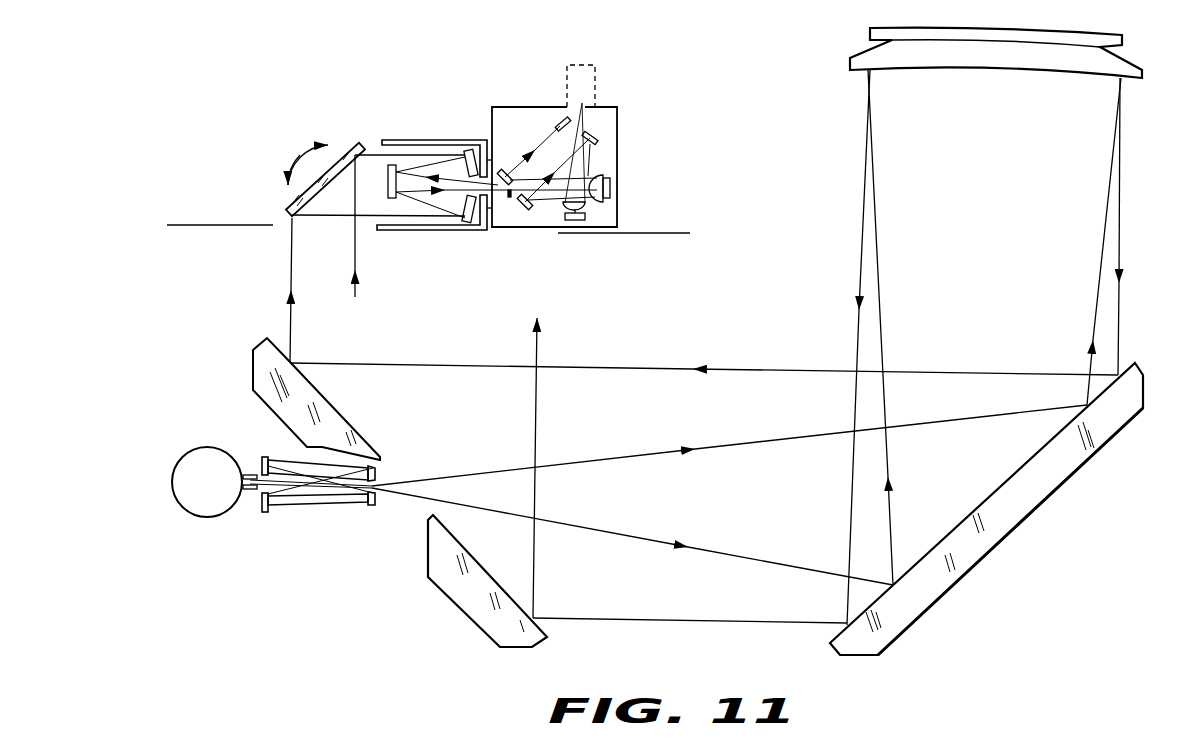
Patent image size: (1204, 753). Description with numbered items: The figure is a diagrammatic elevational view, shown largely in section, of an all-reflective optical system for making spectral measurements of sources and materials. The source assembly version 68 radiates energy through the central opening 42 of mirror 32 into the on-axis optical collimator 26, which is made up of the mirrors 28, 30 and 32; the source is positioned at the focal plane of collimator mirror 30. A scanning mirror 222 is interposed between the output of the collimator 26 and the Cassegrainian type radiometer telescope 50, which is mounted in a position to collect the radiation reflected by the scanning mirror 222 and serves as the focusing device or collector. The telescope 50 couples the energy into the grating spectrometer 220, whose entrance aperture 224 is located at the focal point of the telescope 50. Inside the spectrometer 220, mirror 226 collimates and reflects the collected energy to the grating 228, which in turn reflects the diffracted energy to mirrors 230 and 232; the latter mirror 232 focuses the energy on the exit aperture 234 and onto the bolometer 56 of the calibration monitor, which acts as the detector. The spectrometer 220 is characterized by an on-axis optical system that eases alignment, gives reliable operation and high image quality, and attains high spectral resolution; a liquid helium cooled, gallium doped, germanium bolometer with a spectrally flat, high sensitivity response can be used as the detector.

The on-axis optical collimator 26 is at (838, 362).
The collimator mirror 28 is at (975, 567).
The collimator mirror 30 is at (1143, 73).
The collimator mirror 32 is at (488, 637).
The central opening 42 is at (417, 500).
The Cassegrainian type radiometer telescope 50 is at (394, 140).
The bolometer 56 is at (596, 90).
The source assembly version 68 is at (230, 438).
The grating spectrometer 220 is at (540, 107).
The scanning mirror 222 is at (286, 205).
The entrance aperture 224 is at (507, 186).
The mirror 226 is at (597, 182).
The grating 228 is at (528, 208).
The mirror 230 is at (597, 141).
The mirror 232 is at (590, 212).
The exit aperture 234 is at (572, 110).